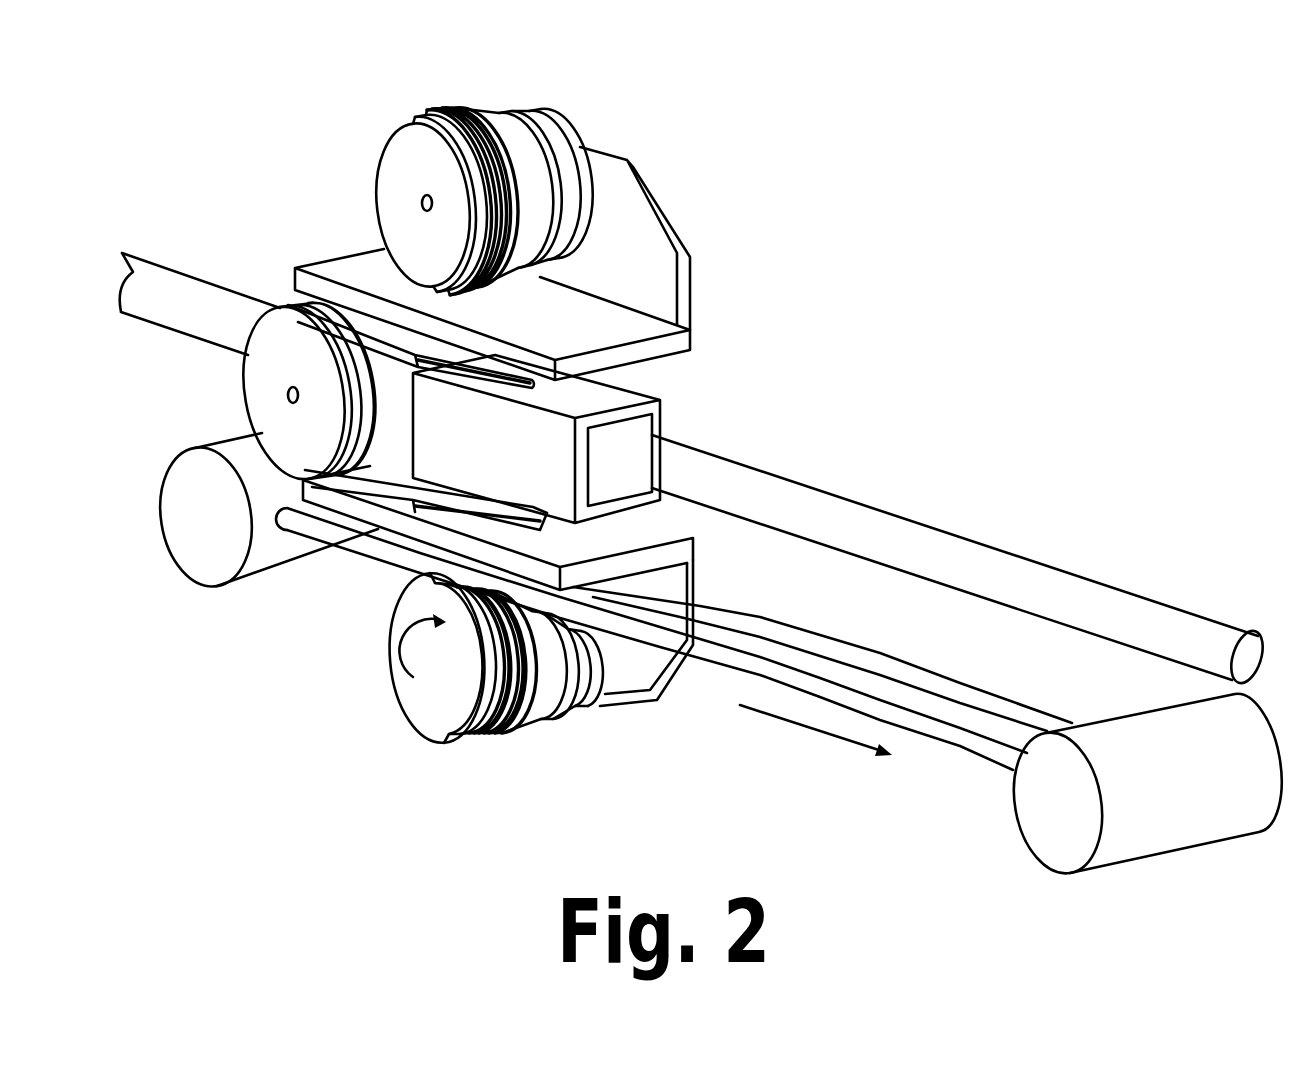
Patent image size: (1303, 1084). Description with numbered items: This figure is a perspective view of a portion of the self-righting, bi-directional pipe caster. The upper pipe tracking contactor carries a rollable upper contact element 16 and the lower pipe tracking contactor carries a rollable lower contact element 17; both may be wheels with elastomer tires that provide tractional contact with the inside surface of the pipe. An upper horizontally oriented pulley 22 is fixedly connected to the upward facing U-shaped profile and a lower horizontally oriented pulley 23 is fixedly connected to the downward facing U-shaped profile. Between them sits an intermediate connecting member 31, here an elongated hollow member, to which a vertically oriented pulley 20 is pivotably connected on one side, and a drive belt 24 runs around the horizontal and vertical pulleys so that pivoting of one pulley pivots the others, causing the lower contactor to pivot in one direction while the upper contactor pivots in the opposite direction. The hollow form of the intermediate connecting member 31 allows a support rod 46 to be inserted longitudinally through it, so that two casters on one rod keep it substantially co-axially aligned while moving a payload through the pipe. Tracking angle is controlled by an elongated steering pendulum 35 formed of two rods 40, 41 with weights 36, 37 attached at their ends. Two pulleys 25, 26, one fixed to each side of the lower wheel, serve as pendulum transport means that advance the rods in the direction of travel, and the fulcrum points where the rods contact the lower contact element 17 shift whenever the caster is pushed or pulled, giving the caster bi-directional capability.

The rollable upper contact element 16 is at (513, 104).
The rollable lower contact element 17 is at (533, 743).
The vertically oriented pulley 20 is at (243, 388).
The upper horizontally oriented pulley 22 is at (470, 382).
The lower horizontally oriented pulley 23 is at (445, 553).
The drive belt 24 is at (363, 490).
The pulley 25 is at (403, 700).
The pulley 26 is at (600, 700).
The intermediate connecting member 31 is at (662, 404).
The elongated steering pendulum 35 is at (990, 690).
The weight 36 is at (1145, 855).
The weight 37 is at (175, 567).
The rod 40 is at (880, 650).
The rod 41 is at (962, 745).
The support rod 46 is at (978, 536).